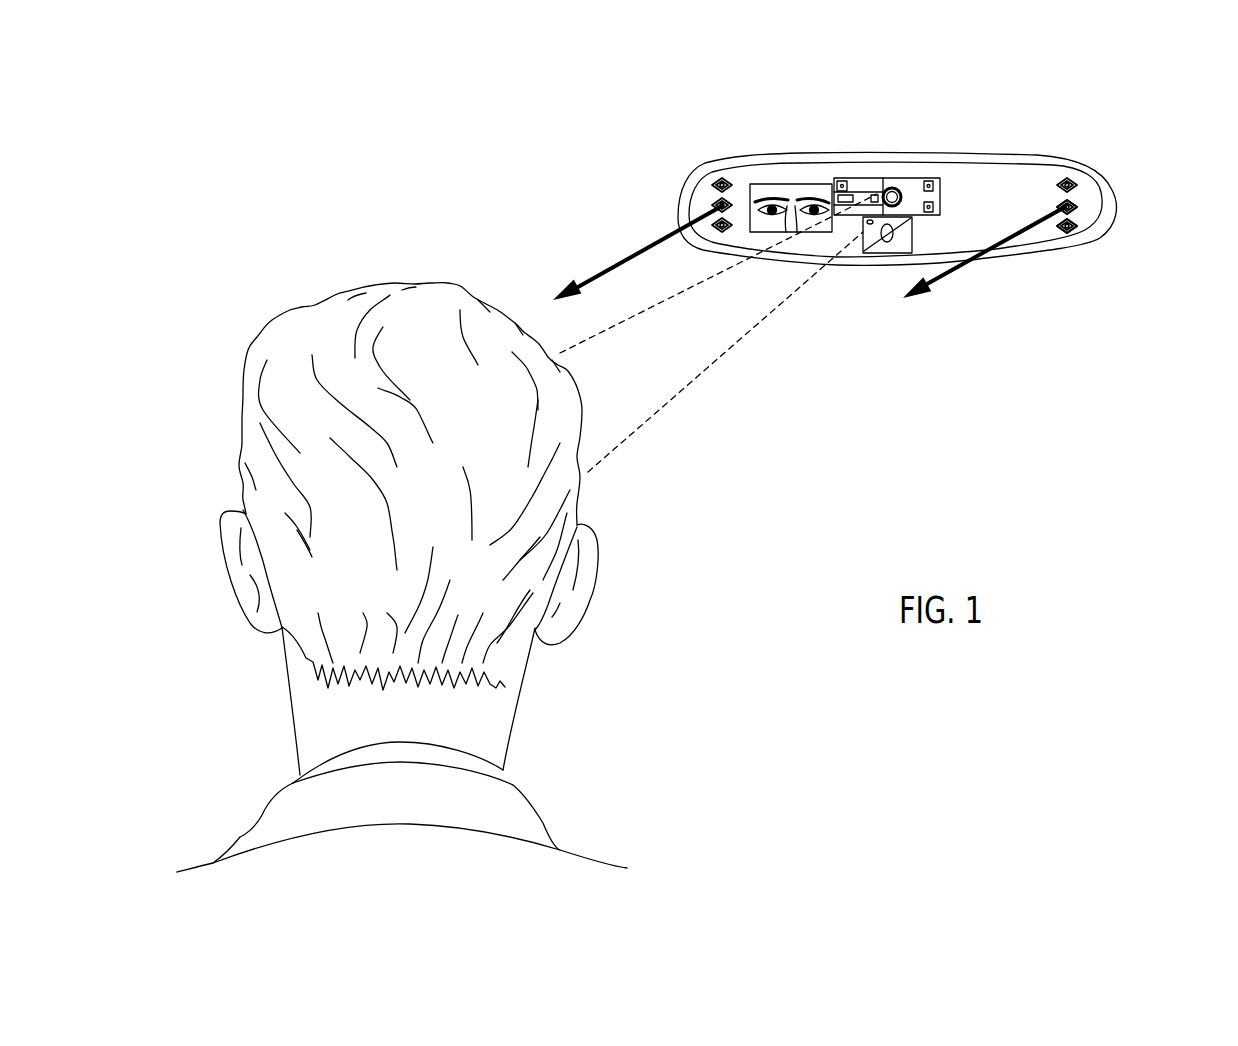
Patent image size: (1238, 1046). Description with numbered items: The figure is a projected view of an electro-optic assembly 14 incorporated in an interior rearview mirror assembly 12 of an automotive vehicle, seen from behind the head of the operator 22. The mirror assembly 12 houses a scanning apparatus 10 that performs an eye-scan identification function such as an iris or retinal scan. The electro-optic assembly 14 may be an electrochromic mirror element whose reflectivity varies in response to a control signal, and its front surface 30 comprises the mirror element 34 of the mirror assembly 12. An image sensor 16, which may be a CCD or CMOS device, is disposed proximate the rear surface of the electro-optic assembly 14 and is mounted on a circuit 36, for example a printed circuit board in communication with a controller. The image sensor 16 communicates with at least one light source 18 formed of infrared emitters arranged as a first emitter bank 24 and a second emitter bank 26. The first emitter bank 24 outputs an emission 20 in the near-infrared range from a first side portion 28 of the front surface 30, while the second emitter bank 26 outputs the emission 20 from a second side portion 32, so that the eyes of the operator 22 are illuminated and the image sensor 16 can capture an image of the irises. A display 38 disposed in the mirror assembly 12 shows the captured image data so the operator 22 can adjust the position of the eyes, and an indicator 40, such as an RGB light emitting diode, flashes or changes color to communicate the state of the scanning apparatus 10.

The scanning apparatus 10 is at (688, 82).
The rearview mirror assembly 12 is at (1048, 155).
The electro-optic assembly 14 is at (800, 166).
The image sensor 16 is at (900, 186).
The light source 18 is at (886, 204).
The emission 20 is at (615, 262).
The operator 22 is at (338, 303).
The first emitter bank 24 is at (713, 193).
The second emitter bank 26 is at (1071, 220).
The first side portion 28 is at (686, 160).
The front surface 30 is at (1110, 259).
The second side portion 32 is at (1108, 162).
The mirror element 34 is at (1045, 240).
The circuit 36 is at (926, 196).
The display 38 is at (780, 193).
The indicator 40 is at (883, 254).